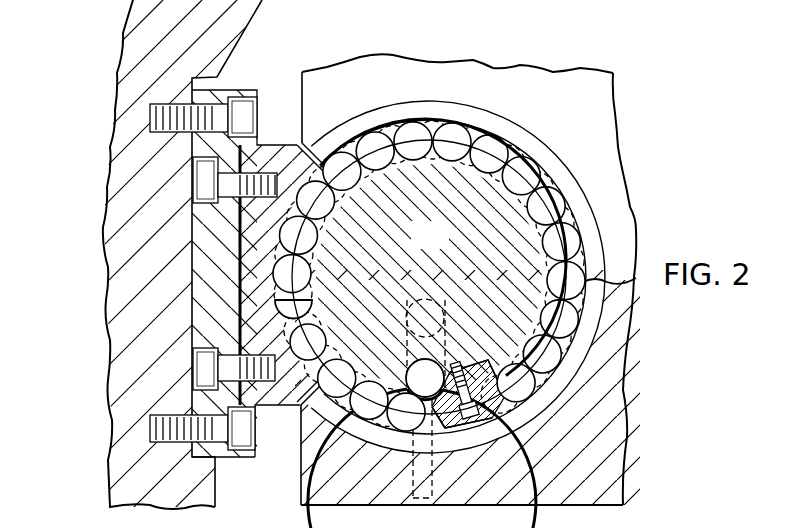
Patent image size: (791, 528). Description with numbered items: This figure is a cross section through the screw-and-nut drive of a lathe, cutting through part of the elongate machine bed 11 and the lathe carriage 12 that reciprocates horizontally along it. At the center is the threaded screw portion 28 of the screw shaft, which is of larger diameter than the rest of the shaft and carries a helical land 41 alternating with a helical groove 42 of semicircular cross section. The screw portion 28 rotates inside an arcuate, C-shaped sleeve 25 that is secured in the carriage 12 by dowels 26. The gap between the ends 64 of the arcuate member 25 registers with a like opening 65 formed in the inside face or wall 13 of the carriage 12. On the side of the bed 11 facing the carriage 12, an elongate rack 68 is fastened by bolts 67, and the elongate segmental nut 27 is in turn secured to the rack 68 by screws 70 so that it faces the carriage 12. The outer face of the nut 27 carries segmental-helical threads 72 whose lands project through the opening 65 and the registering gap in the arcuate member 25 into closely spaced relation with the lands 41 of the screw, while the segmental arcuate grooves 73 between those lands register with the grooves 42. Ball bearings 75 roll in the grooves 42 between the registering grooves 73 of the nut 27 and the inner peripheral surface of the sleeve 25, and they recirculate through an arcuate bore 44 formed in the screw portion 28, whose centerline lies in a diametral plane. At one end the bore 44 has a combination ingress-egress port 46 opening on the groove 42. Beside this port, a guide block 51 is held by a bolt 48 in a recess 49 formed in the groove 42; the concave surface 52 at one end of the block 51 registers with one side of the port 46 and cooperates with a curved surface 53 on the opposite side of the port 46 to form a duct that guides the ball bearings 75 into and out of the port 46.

The machine bed 11 is at (245, 17).
The lathe carriage 12 is at (490, 70).
The inside face or wall of the carriage 13 is at (302, 480).
The arcuate C-shaped sleeve 25 is at (483, 121).
The dowels 26 is at (412, 465).
The elongate segmental nut 27 is at (247, 268).
The threaded screw portion of the shaft 28 is at (418, 244).
The helical land 41 is at (580, 233).
The helical groove 42 is at (537, 228).
The arcuate bore 44 is at (447, 337).
The ingress-egress port 46 is at (408, 365).
The bolt 48 is at (484, 440).
The recess 49 is at (472, 376).
The guide block 51 is at (503, 413).
The concave surface 52 is at (450, 442).
The curved surface 53 is at (402, 382).
The ends of the arcuate member 64 is at (306, 142).
The opening 65 is at (300, 143).
The bolts 67 is at (172, 132).
The elongate rack 68 is at (225, 462).
The screws 70 is at (193, 180).
The segmental-helical threads 72 is at (328, 208).
The segmental arcuate grooves 73 is at (288, 328).
The ball bearings 75 is at (402, 123).